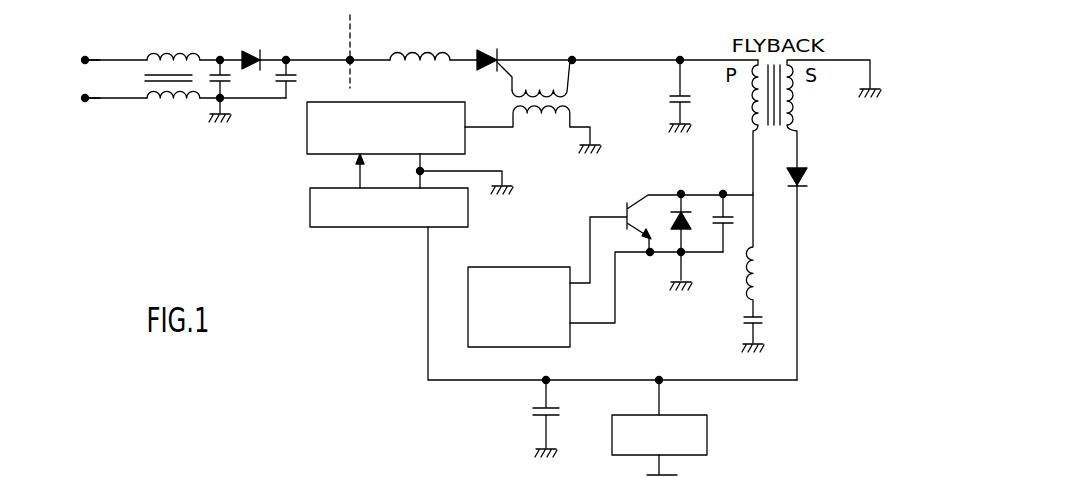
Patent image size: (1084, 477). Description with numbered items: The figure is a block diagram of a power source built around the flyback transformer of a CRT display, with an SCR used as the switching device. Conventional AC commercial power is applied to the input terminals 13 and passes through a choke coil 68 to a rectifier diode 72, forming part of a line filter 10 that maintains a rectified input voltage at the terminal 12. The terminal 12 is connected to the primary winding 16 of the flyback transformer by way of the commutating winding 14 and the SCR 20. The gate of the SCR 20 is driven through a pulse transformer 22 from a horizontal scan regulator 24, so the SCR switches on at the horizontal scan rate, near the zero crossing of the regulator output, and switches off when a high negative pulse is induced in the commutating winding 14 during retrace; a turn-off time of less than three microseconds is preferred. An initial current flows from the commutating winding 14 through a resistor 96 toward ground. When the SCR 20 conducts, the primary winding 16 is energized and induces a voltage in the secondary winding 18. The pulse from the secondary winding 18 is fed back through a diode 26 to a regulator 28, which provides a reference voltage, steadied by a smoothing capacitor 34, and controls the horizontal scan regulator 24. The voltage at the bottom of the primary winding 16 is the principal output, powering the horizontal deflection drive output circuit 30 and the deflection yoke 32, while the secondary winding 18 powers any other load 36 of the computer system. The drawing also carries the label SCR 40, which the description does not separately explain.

The line filter 10 is at (176, 212).
The terminal 12 is at (353, 59).
The input terminals 13 is at (84, 98).
The commutating winding 14 is at (425, 57).
The primary winding 16 is at (754, 112).
The secondary winding 18 is at (799, 107).
The SCR 20 is at (495, 54).
The pulse transformer 22 is at (548, 116).
The horizontal scan regulator 24 is at (468, 143).
The diode 26 is at (808, 176).
The regulator 28 is at (355, 228).
The horizontal deflection drive output circuit 30 is at (510, 267).
The deflection yoke 32 is at (768, 287).
The smoothing capacitor 34 is at (533, 410).
The load 36 is at (708, 439).
The SCR (horizontal output switch) 40 is at (493, 334).
The choke coil 68 is at (179, 49).
The rectifier diode 72 is at (248, 52).
The resistor 96 is at (689, 98).